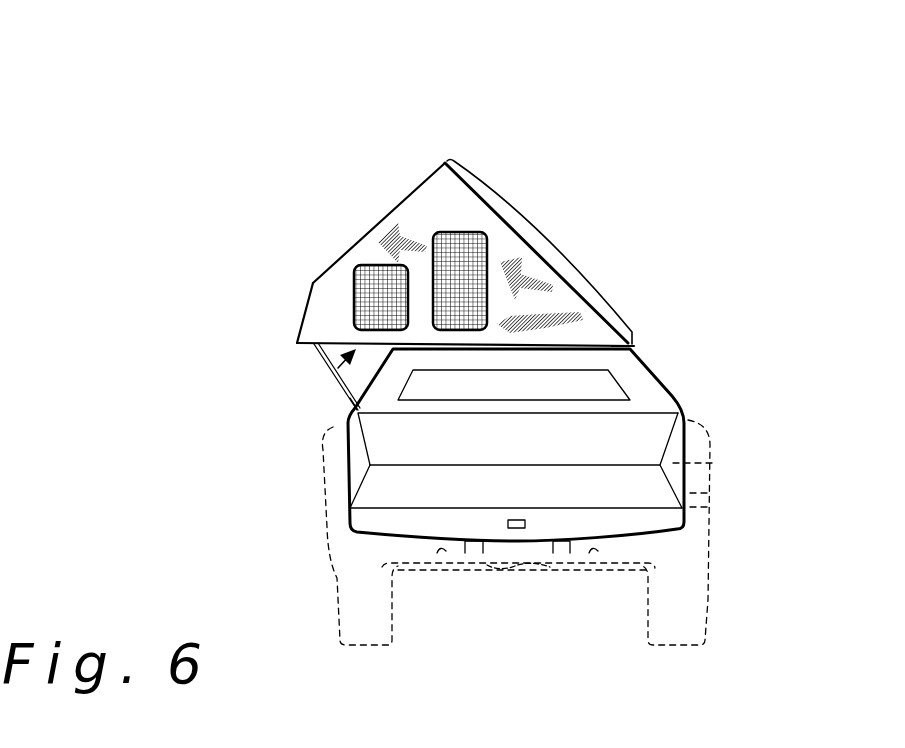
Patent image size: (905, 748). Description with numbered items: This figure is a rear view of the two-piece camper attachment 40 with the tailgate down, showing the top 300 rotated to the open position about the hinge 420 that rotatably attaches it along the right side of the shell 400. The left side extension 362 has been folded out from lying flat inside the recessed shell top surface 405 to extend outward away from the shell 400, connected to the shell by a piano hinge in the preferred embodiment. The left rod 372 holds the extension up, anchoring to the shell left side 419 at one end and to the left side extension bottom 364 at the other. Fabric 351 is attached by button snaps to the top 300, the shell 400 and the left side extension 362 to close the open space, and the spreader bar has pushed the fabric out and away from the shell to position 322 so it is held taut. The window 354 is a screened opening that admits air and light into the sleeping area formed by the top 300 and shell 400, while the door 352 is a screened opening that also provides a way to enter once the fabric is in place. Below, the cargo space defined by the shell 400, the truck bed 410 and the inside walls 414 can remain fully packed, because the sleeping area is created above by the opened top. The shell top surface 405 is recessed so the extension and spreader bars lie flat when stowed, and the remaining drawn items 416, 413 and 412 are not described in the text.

The camper attachment 40 is at (738, 120).
The top 300 is at (537, 237).
The fabric 351 is at (423, 213).
The door 352 is at (460, 258).
The window 354 is at (370, 282).
The position of fabric pushed out by spreader bar 322 is at (313, 285).
The left rod 372 is at (320, 358).
The left side extension 362 is at (335, 376).
The left side extension bottom 364 is at (364, 363).
The hinge 420 is at (634, 344).
The shell 400 is at (643, 388).
The shell top surface 405 is at (600, 445).
The right side wall 416 is at (628, 413).
The inside wall 414 is at (690, 476).
The shell left side 419 is at (355, 388).
The left side panel 413 is at (347, 470).
The truck bed 410 is at (468, 485).
The bumper bracket 412 is at (567, 438).